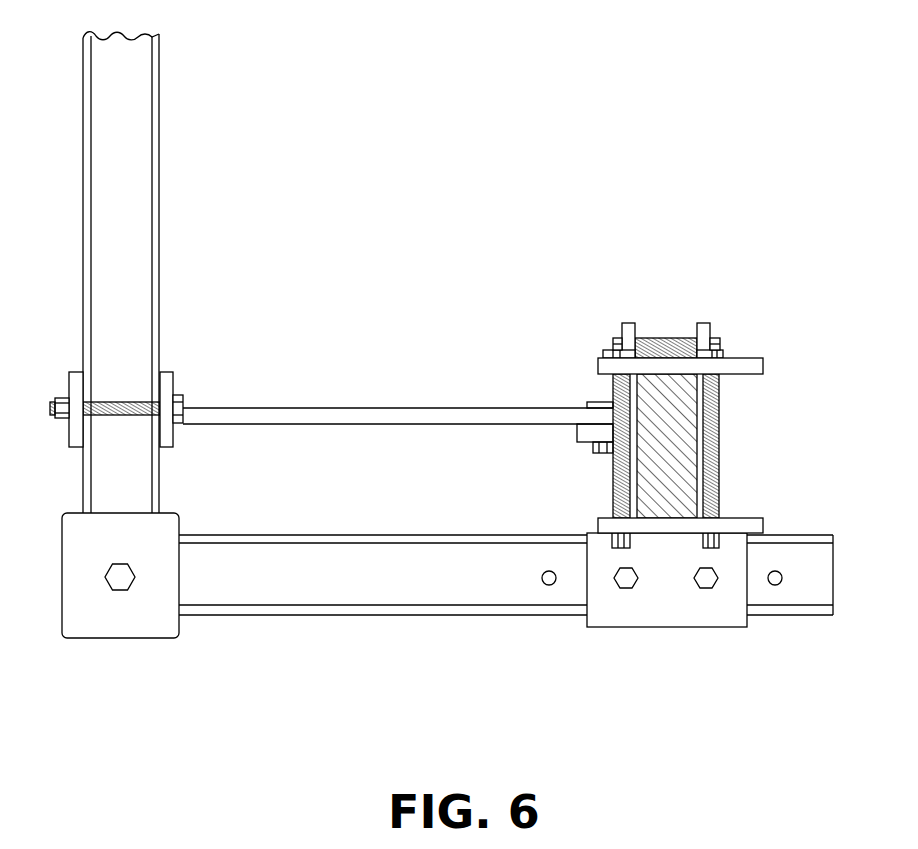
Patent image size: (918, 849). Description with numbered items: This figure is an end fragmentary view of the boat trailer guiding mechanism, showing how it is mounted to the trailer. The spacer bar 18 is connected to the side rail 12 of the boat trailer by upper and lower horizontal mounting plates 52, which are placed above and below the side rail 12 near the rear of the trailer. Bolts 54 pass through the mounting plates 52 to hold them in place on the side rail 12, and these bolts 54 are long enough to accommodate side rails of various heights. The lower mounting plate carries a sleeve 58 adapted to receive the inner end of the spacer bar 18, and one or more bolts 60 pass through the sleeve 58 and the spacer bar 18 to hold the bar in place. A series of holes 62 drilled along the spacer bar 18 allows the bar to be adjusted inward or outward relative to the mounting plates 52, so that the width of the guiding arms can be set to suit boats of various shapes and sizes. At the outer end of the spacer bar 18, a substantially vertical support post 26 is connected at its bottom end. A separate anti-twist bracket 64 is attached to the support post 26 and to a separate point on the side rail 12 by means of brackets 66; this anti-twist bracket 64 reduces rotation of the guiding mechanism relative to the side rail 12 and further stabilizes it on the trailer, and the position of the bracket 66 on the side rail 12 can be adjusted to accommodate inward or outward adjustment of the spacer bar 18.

The side rail 12 is at (687, 449).
The spacer bar 18 is at (312, 616).
The support post 26 is at (159, 99).
The mounting plates 52 is at (765, 362).
The bolts 54 is at (607, 347).
The sleeve 58 is at (703, 628).
The bolts 60 is at (702, 592).
The holes 62 is at (550, 587).
The anti-twist bracket 64 is at (343, 408).
The brackets 66 is at (78, 371).